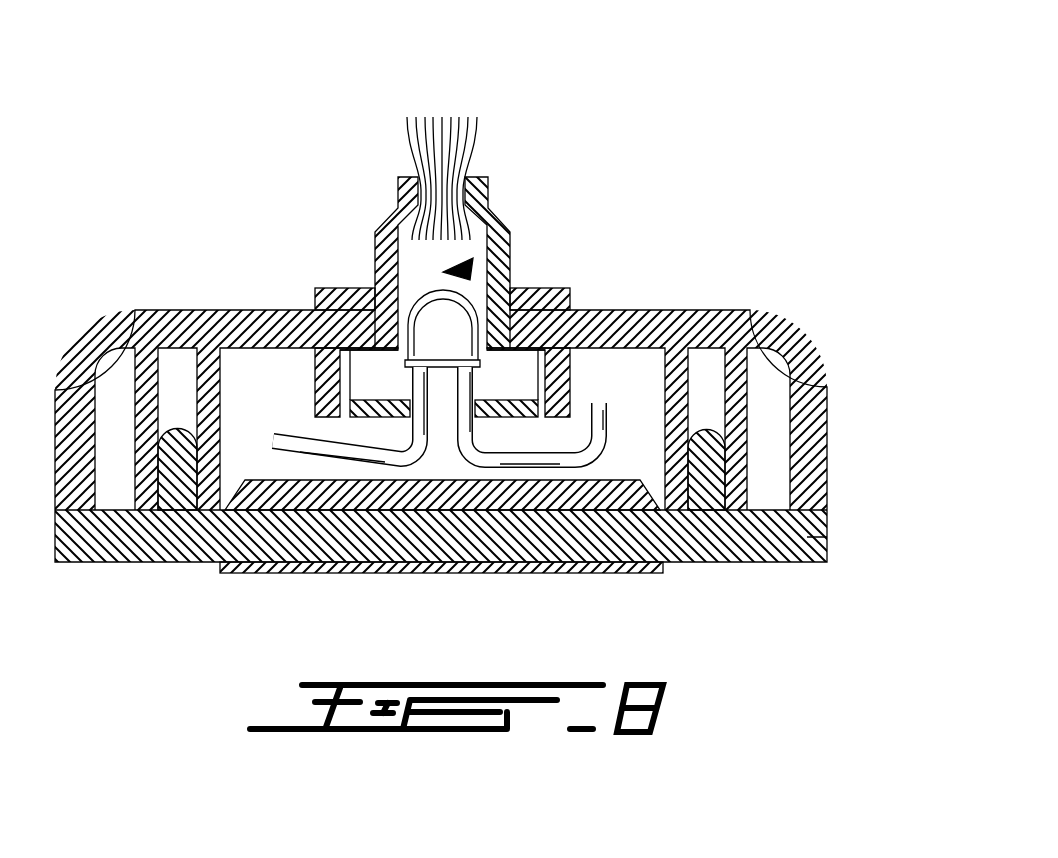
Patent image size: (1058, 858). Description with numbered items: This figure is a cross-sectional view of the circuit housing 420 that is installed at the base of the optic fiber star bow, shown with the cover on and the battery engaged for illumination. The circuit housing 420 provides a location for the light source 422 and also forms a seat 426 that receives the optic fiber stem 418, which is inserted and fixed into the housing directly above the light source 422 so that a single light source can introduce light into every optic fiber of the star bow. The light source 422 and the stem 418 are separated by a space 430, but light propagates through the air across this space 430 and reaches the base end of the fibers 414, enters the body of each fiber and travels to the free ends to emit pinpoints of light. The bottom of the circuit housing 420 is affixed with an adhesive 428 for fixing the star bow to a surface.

The base end of the fibers 414 is at (390, 222).
The optic fiber stem 418 is at (447, 138).
The circuit housing 420 is at (747, 327).
The light source 422 is at (437, 325).
The seat 426 is at (495, 215).
The adhesive 428 is at (578, 573).
The space 430 is at (470, 268).